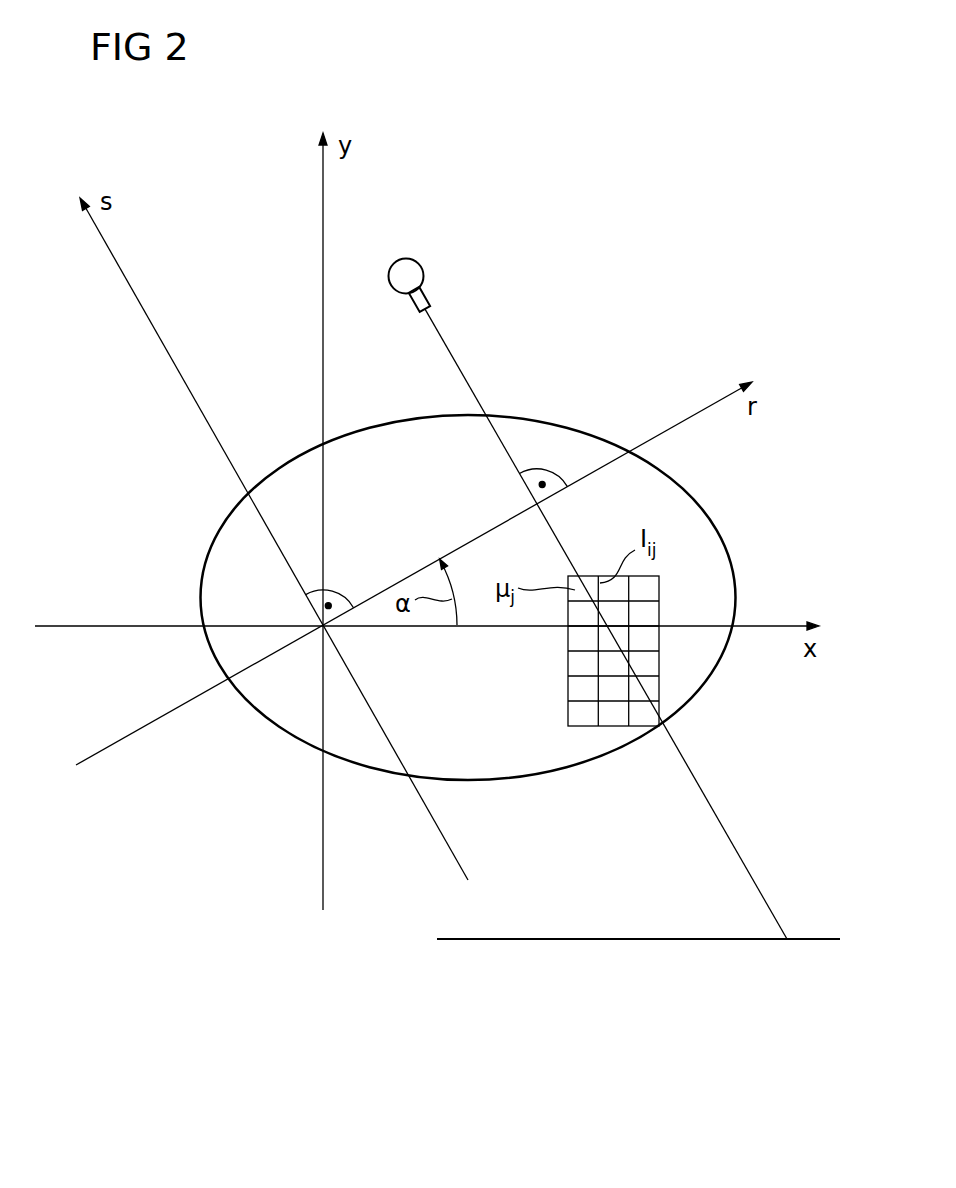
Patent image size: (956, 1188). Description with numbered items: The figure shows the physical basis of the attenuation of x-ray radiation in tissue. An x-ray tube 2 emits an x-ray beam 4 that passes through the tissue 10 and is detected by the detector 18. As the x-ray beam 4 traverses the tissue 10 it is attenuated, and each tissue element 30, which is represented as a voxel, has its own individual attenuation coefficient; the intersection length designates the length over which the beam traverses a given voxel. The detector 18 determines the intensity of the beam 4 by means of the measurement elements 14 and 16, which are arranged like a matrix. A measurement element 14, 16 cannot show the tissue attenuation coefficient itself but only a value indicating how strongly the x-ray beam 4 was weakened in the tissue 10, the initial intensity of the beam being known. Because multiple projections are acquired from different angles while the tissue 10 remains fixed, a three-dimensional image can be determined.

The x-ray tube 2 is at (422, 263).
The x-ray beam 4 is at (455, 357).
The tissue 10 is at (575, 430).
The measurement element 14 is at (597, 940).
The measurement element 16 is at (713, 940).
The detector 18 is at (830, 940).
The tissue element 30 is at (660, 590).